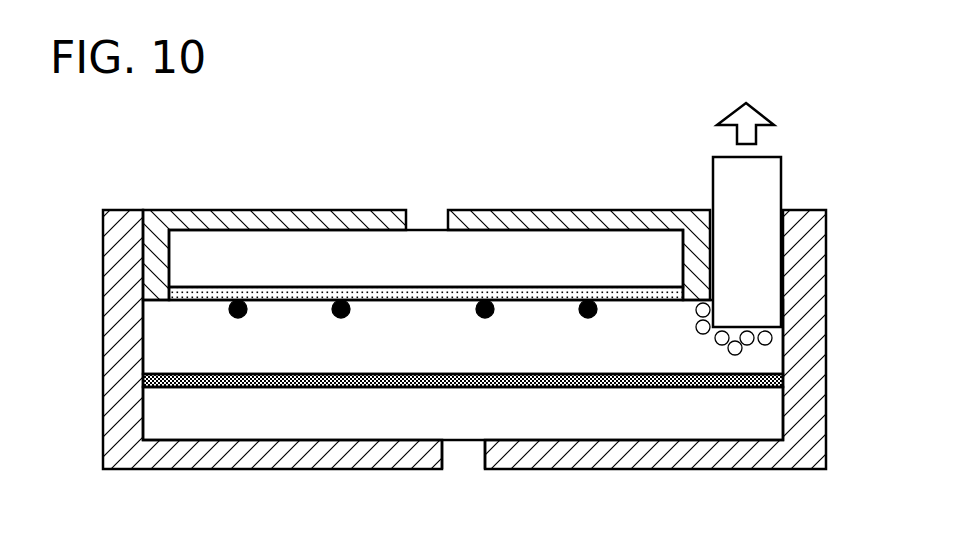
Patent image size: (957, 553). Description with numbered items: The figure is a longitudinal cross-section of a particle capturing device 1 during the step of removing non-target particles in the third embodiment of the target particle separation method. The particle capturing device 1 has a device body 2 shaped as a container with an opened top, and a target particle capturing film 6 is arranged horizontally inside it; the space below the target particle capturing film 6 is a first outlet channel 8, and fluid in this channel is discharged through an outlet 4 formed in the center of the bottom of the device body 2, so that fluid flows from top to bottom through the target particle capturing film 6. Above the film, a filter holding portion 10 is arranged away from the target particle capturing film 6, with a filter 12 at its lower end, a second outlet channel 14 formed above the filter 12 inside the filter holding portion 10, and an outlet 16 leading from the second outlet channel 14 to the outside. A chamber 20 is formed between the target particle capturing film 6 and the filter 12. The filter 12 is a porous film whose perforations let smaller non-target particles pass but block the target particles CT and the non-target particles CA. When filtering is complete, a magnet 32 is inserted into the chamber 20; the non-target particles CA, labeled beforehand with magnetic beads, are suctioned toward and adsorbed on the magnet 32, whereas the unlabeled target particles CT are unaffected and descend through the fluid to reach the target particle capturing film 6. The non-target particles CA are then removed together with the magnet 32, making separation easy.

The particle capturing device 1 is at (835, 196).
The device body 2 is at (826, 313).
The outlet 4 is at (486, 457).
The target particle capturing film 6 is at (727, 388).
The first outlet channel 8 is at (633, 408).
The filter holding portion 10 is at (258, 210).
The filter 12 is at (541, 288).
The second outlet channel 14 is at (337, 272).
The outlet 16 is at (448, 216).
The chamber 20 is at (417, 358).
The magnet 32 is at (780, 176).
The target particles CT is at (237, 319).
The non-target particles CA is at (690, 312).